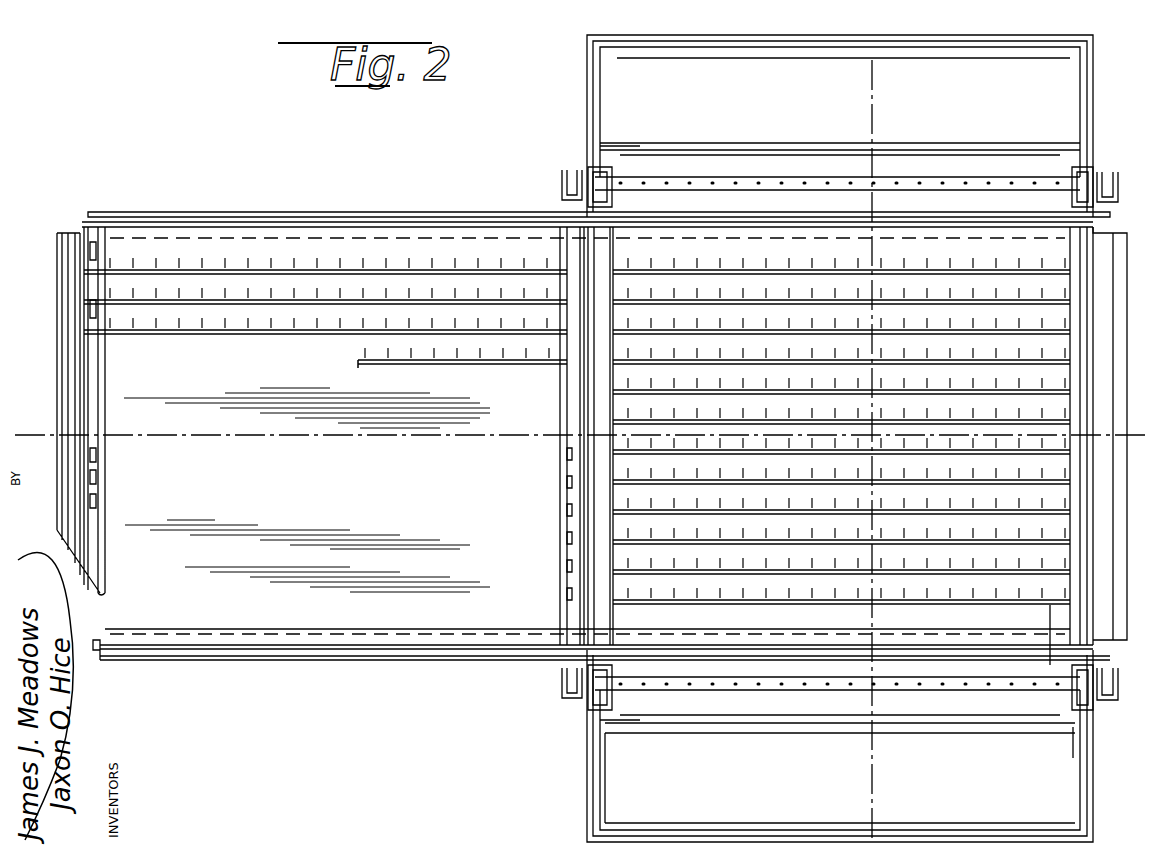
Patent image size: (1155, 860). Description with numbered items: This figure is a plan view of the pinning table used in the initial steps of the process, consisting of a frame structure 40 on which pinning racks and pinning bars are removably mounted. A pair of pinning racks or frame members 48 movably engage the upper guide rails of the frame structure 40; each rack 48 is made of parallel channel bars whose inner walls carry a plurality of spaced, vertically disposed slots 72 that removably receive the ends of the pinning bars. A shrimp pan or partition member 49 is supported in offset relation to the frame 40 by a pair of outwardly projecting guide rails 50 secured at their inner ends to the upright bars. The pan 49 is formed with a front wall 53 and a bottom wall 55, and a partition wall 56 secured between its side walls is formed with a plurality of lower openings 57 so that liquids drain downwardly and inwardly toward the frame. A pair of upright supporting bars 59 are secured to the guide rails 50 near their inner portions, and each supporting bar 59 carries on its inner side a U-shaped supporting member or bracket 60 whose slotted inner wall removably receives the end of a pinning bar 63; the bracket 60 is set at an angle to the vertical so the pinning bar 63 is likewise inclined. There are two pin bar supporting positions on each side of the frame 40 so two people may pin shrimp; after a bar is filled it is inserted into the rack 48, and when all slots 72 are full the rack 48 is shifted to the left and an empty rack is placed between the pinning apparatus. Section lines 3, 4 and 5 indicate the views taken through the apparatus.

The frame structure 40 is at (453, 209).
The pinning rack 48 is at (1091, 267).
The shrimp pan 49 is at (802, 438).
The guide rail 50 is at (587, 780).
The front wall 53 is at (955, 830).
The bottom wall 55 is at (840, 435).
The partition wall 56 is at (700, 762).
The lower opening 57 is at (652, 772).
The upright supporting bar 59 is at (1095, 710).
The U-shaped supporting bracket 60 is at (588, 708).
The pinning bar 63 is at (1093, 704).
The slot 72 is at (563, 480).
The section line 3- 3 is at (1144, 413).
The section line 4- 4 is at (852, 807).
The section line 5- 5 is at (1062, 749).